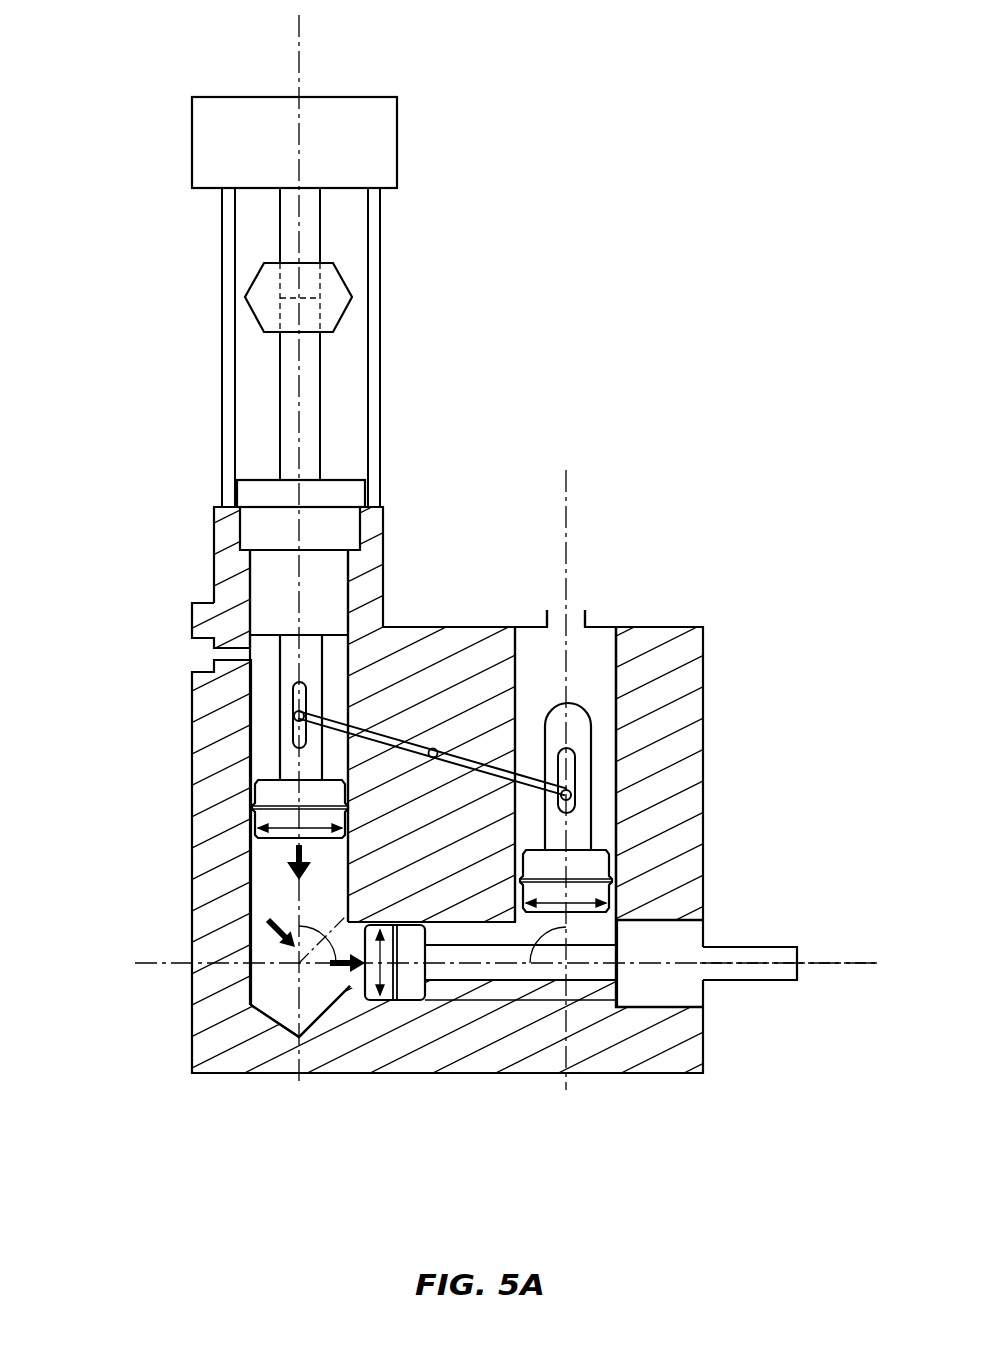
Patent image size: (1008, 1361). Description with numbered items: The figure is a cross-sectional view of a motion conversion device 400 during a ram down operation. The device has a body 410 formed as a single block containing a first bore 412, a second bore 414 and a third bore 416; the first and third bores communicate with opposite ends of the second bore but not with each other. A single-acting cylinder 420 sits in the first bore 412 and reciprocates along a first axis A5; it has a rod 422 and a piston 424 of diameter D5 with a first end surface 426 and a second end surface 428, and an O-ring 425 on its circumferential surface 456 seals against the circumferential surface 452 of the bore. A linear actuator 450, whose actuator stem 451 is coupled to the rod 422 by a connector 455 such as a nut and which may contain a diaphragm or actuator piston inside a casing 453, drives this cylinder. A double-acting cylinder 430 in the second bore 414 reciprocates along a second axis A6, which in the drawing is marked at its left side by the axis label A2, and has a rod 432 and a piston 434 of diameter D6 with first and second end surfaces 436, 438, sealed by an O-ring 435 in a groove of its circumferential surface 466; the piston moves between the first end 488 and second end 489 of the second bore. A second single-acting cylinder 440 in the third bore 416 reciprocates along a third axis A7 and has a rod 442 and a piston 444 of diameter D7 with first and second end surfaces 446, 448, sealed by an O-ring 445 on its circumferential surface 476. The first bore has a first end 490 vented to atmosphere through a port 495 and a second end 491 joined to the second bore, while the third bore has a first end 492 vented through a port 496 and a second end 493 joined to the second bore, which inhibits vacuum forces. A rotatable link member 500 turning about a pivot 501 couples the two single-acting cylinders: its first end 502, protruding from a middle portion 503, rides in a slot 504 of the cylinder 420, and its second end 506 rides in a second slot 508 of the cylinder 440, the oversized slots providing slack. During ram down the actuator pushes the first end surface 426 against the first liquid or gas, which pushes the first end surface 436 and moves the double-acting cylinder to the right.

The motion conversion device 400 is at (127, 490).
The body 410 is at (477, 648).
The first bore 412 is at (282, 727).
The second bore 414 is at (588, 1000).
The third bore 416 is at (660, 694).
The single-acting cylinder 420 is at (275, 763).
The rod 422 is at (252, 748).
The piston 424 is at (254, 806).
The O-ring 425 is at (257, 828).
The first end surface 426 is at (278, 825).
The second end surface 428 is at (257, 781).
The double-acting cylinder 430 is at (480, 992).
The rod 432 is at (603, 1005).
The piston 434 is at (413, 985).
The O-ring 435 is at (398, 1000).
The first end surface 436 is at (366, 998).
The second end surface 438 is at (462, 985).
The single-acting cylinder 440 is at (604, 728).
The rod 442 is at (250, 704).
The piston 444 is at (598, 866).
The O-ring 445 is at (598, 892).
The first end surface 446 is at (597, 913).
The second end surface 448 is at (598, 850).
The linear actuator 450 is at (303, 288).
The actuator stem 451 is at (312, 243).
The circumferential surface 452 is at (626, 666).
The casing 453 is at (192, 142).
The connector 455 is at (260, 290).
The circumferential surface 456 is at (255, 790).
The circumferential surface 466 is at (420, 1000).
The circumferential surface 476 is at (598, 903).
The first end 488 is at (350, 985).
The second end 489 is at (577, 997).
The first end 490 is at (245, 684).
The second end 491 is at (330, 884).
The first end 492 is at (535, 647).
The second end 493 is at (603, 834).
The port 495 is at (200, 652).
The port 496 is at (577, 620).
The rotatable link member 500 is at (486, 787).
The pivot 501 is at (435, 749).
The first end 502 is at (292, 710).
The middle portion 503 is at (386, 725).
The slot 504 is at (296, 690).
The second end 506 is at (573, 800).
The second slot 508 is at (572, 771).
The flow axis A2 is at (489, 982).
The first axis A5 is at (300, 62).
The second axis A6 is at (820, 966).
The third axis A7 is at (568, 553).
The diameter D5 is at (262, 838).
The diameter D6 is at (379, 1000).
The diameter D7 is at (600, 915).